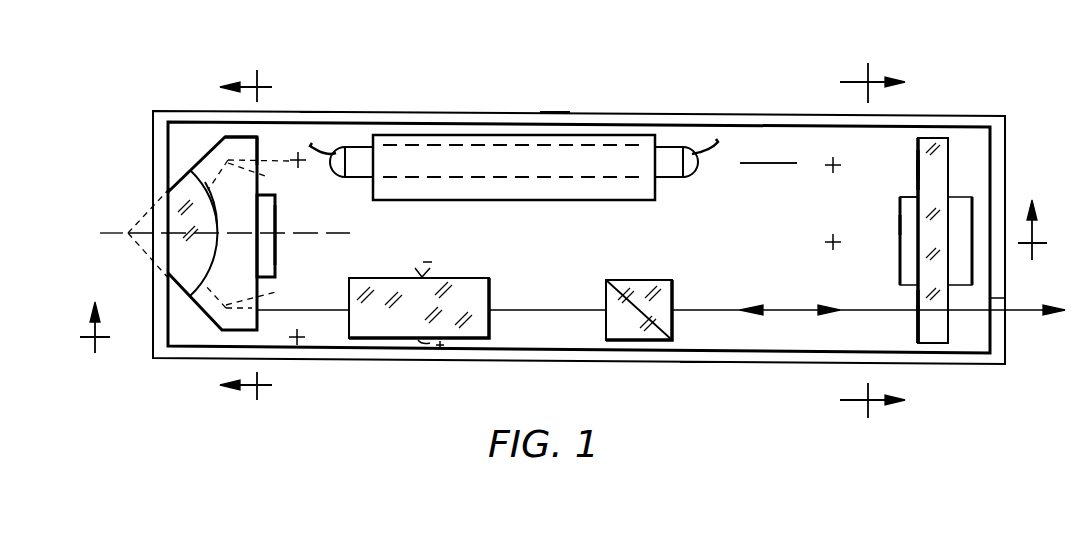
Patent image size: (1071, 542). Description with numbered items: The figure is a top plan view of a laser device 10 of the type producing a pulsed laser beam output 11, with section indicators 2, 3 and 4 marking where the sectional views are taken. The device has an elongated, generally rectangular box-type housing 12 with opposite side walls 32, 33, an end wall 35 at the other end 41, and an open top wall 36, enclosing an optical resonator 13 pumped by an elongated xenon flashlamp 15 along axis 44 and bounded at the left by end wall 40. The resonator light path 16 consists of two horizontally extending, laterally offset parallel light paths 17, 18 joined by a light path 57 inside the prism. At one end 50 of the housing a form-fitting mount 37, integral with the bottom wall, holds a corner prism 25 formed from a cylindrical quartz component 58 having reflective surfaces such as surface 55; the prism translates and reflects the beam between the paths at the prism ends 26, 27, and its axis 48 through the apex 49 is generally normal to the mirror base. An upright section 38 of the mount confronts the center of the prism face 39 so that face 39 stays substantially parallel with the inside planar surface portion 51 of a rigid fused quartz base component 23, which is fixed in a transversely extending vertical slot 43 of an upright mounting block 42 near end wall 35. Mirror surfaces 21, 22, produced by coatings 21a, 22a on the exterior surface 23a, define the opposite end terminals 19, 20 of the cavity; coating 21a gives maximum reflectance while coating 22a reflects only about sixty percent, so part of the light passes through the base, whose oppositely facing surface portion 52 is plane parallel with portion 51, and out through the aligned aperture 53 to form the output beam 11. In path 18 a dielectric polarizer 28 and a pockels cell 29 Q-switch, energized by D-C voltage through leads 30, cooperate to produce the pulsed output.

The section line 2- 2 is at (564, 282).
The section line 3- 3 is at (253, 238).
The section line 4- 4 is at (872, 241).
The laser device 10 is at (403, 112).
The laser beam output 11 is at (1038, 313).
The housing 12 is at (480, 112).
The optical resonator 13 is at (948, 166).
The xenon flashlamp 15 is at (679, 180).
The resonator light path 16 is at (765, 163).
The light path 17 is at (792, 165).
The light path 18 is at (778, 310).
The end terminal 19 is at (918, 167).
The end terminal 20 is at (918, 312).
The mirror surface 21 is at (918, 160).
The coating 21a is at (918, 177).
The mirror surface 22 is at (918, 303).
The coating 22a is at (918, 337).
The base component 23 is at (953, 197).
The exterior surface 23a is at (918, 139).
The corner prism 25 is at (217, 144).
The prism end 26 is at (255, 176).
The prism end 27 is at (255, 294).
The dielectric polarizer 28 is at (655, 280).
The pockels cell 29 is at (449, 278).
The leads 30 is at (414, 299).
The side wall 32 is at (555, 112).
The side wall 33 is at (702, 366).
The end wall 35 is at (1006, 140).
The open top wall 36 is at (307, 113).
The mount 37 is at (258, 138).
The upright section 38 is at (275, 270).
The prism face 39 is at (277, 223).
The housing end wall 40 is at (153, 148).
The other end 41 is at (1005, 203).
The mounting block 42 is at (900, 253).
The vertical slot 43 is at (906, 220).
The laser tube axis 44 is at (552, 201).
The prism axis 48 is at (118, 234).
The apex 49 is at (140, 206).
The laser beam 50 is at (717, 310).
The inside planar surface portion 51 is at (915, 199).
The surface portion 52 is at (950, 322).
The aperture 53 is at (990, 298).
The reflective surface 55 is at (214, 252).
The light path 57 is at (218, 205).
The cylindrical quartz component 58 is at (237, 136).